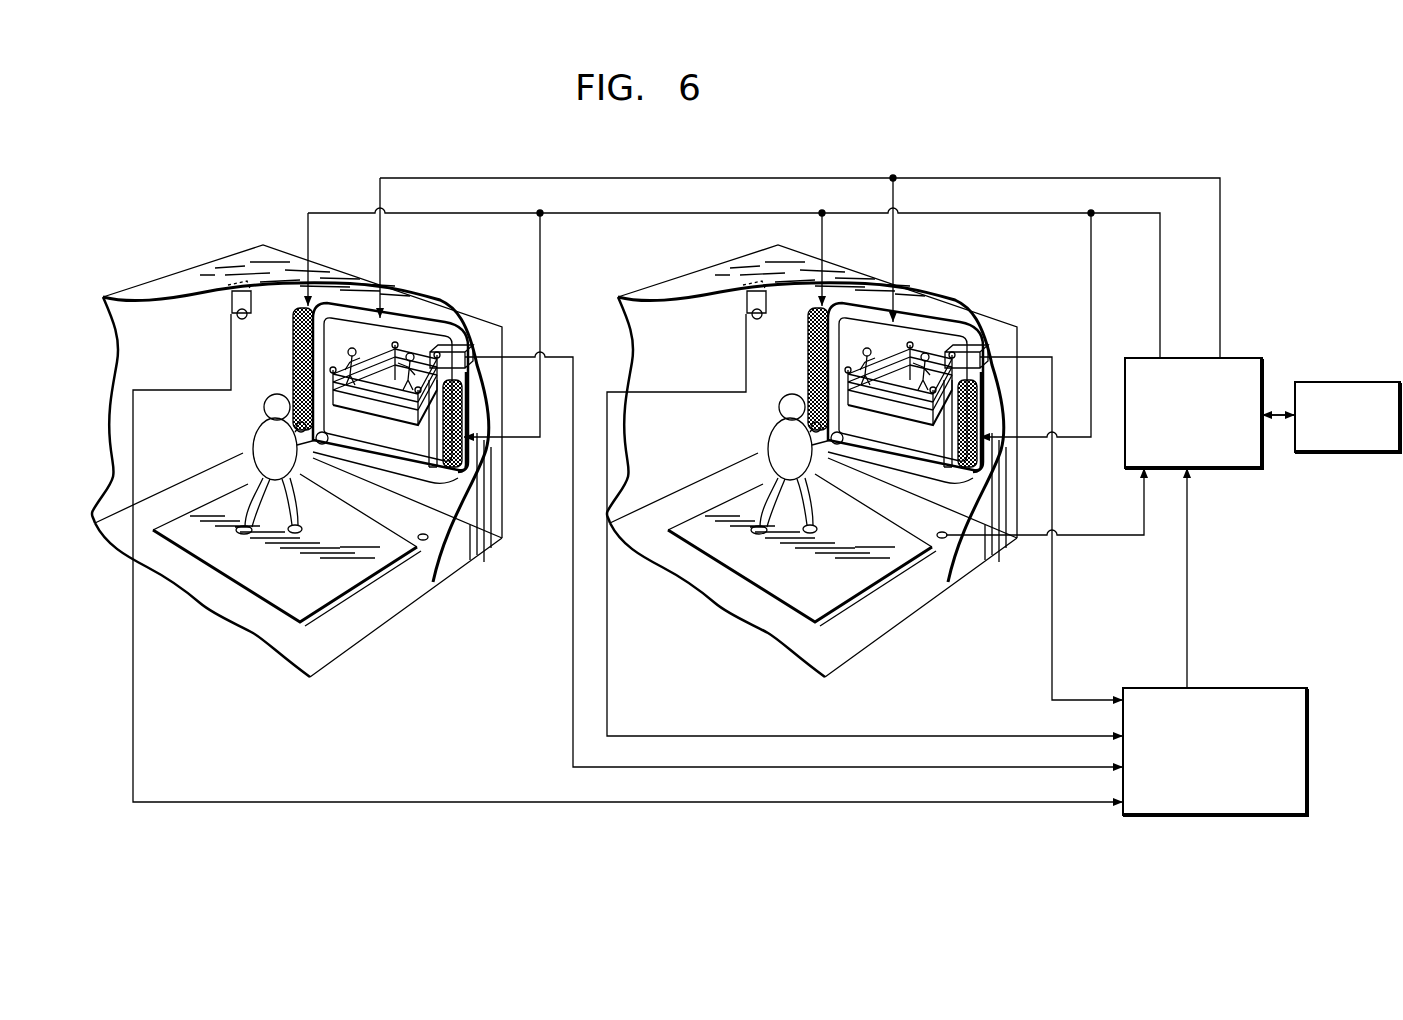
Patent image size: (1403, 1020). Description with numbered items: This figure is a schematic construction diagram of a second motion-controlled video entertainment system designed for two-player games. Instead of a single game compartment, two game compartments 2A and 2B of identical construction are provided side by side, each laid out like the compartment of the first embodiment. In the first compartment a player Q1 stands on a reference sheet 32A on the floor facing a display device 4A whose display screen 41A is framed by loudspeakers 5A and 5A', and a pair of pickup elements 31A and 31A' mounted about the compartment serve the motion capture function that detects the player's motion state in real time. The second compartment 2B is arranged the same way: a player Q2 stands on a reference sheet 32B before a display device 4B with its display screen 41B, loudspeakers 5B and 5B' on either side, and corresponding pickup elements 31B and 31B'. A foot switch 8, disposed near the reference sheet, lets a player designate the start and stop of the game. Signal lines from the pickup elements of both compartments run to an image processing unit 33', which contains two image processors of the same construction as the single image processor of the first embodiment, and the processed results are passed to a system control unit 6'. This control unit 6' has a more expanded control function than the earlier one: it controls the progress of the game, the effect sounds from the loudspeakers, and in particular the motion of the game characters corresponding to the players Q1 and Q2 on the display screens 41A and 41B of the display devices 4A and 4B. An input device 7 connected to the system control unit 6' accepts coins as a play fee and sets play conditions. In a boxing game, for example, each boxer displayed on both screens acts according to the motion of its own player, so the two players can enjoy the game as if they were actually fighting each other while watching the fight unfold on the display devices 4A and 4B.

The game compartment 2A is at (188, 268).
The first speaker of first booth 5A is at (272, 324).
The video camera of first booth 31A is at (212, 314).
The display device 4A is at (390, 375).
The second video camera of first booth 31A' is at (478, 313).
The player Q1 is at (264, 408).
The display screen 41A is at (400, 445).
The second speaker of first booth 5A' is at (499, 443).
The floor sensor mat of first booth 32A is at (290, 608).
The game compartment 2B is at (812, 450).
The first speaker of second booth 5B is at (784, 326).
The video camera of second booth 31B is at (719, 314).
The display device 4B is at (905, 376).
The second video camera of second booth 31B' is at (1005, 315).
The second speaker of second booth 5B' is at (1015, 394).
The player Q2 is at (776, 464).
The display screen 41B is at (950, 440).
The foot switch 8 is at (927, 518).
The floor sensor mat of second booth 32B is at (802, 571).
The system control unit 6' is at (1196, 393).
The input device 7 is at (1345, 382).
The image processing unit 33' is at (1215, 730).